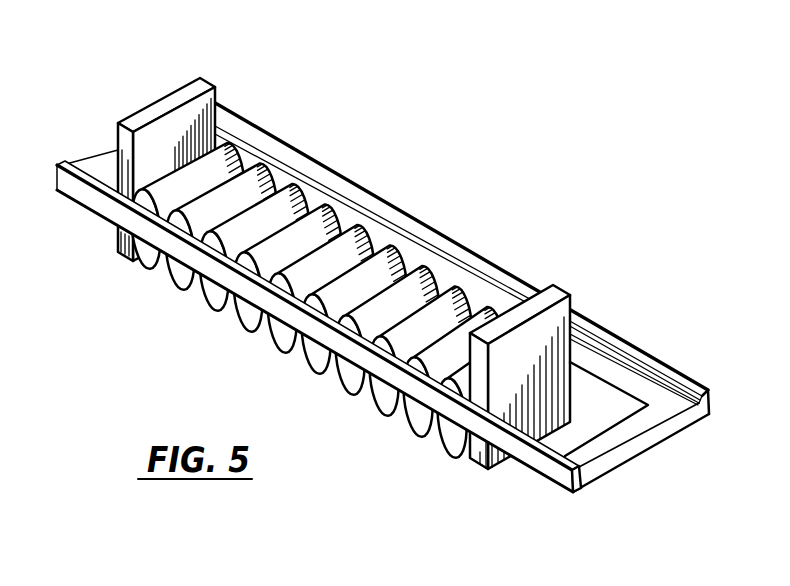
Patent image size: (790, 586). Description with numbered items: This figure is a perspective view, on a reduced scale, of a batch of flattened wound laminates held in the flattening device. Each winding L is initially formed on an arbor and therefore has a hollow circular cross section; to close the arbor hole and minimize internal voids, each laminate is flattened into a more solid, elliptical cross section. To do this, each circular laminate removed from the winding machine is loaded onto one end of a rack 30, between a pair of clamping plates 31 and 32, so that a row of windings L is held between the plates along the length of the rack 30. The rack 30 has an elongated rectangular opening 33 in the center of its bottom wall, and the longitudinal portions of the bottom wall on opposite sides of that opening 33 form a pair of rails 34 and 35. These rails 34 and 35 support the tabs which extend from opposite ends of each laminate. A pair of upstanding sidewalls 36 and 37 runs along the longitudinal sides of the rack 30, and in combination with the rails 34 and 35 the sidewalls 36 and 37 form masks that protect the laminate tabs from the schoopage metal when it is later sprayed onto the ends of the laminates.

The rack 30 is at (369, 281).
The clamping plate 31 is at (585, 318).
The clamping plate 32 is at (133, 115).
The elongated rectangular opening 33 is at (605, 433).
The rail 34 is at (620, 388).
The rail 35 is at (537, 463).
The upstanding sidewall 36 is at (233, 110).
The upstanding sidewall 37 is at (305, 314).
The winding L is at (277, 352).